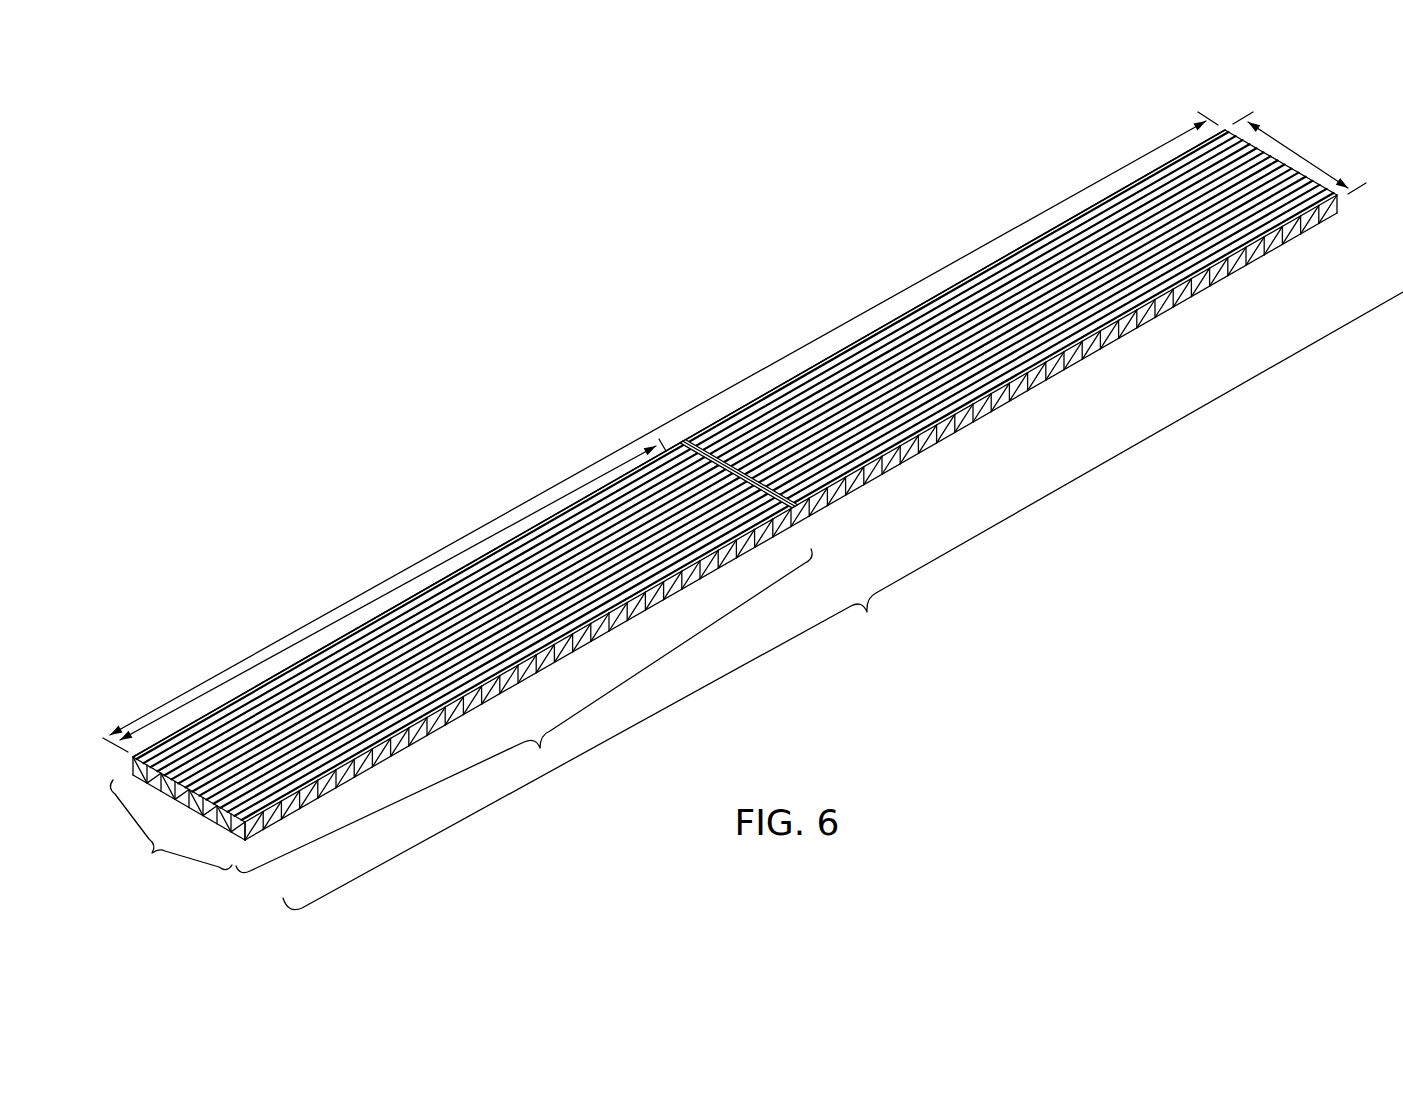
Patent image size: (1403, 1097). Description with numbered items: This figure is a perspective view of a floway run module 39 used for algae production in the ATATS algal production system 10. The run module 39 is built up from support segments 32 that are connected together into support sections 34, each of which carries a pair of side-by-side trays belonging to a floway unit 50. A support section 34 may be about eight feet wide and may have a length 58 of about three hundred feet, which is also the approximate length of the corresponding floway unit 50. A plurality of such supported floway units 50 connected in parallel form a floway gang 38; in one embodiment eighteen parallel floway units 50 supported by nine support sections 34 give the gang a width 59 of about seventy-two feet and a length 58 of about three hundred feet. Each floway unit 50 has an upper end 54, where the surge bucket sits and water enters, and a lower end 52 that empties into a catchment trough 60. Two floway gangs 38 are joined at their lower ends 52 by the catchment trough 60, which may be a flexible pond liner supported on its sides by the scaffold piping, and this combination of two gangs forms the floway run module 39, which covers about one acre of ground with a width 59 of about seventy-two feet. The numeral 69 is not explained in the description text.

The ATATS algal production system 10 is at (440, 343).
The support segment 32 is at (180, 795).
The support section 34 is at (524, 711).
The floway gang 38 is at (171, 830).
The floway run module 39 is at (843, 601).
The floway unit 50 is at (485, 585).
The lower end 52 is at (612, 472).
The upper end 54 is at (193, 723).
The length 58 is at (345, 613).
The width 59 is at (1297, 152).
The catchment trough 60 is at (800, 530).
The overall length 69 is at (548, 492).